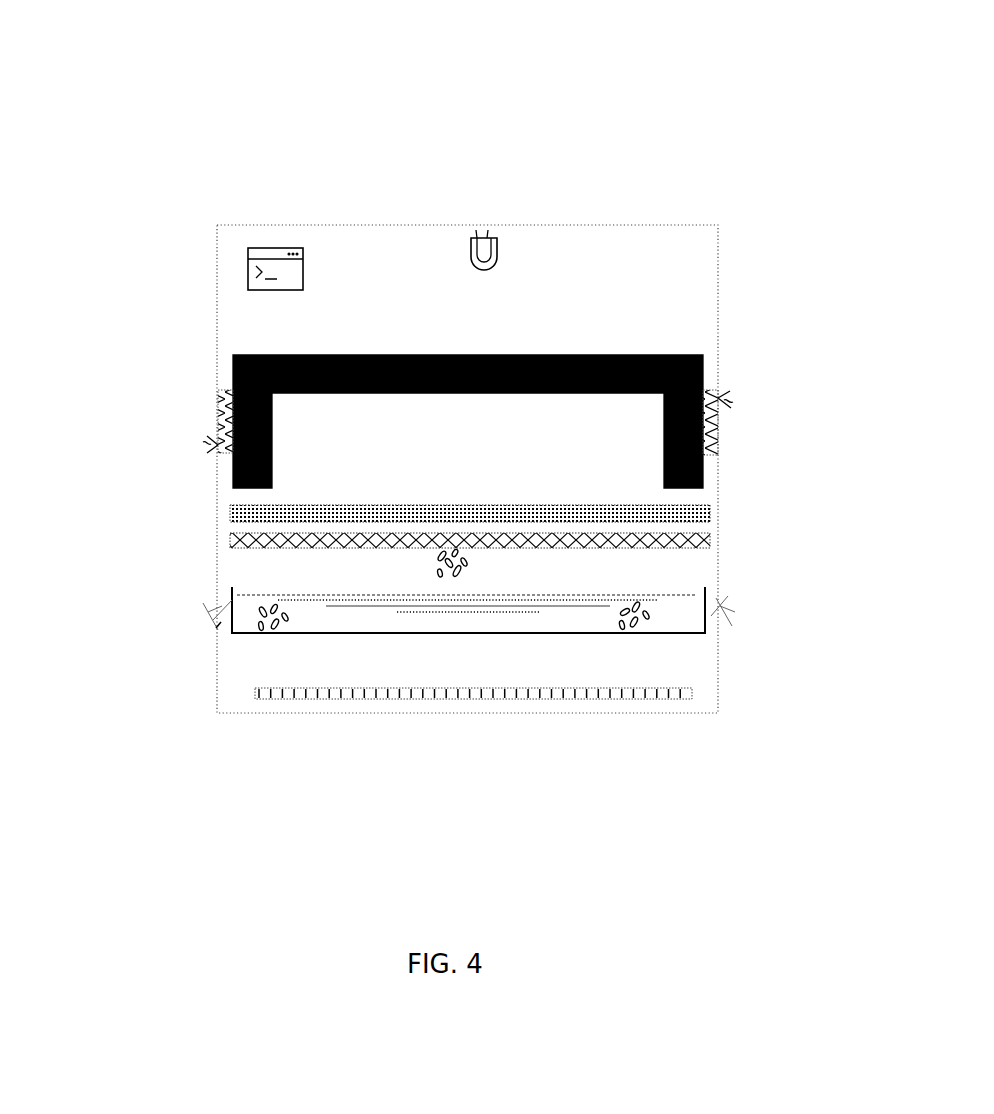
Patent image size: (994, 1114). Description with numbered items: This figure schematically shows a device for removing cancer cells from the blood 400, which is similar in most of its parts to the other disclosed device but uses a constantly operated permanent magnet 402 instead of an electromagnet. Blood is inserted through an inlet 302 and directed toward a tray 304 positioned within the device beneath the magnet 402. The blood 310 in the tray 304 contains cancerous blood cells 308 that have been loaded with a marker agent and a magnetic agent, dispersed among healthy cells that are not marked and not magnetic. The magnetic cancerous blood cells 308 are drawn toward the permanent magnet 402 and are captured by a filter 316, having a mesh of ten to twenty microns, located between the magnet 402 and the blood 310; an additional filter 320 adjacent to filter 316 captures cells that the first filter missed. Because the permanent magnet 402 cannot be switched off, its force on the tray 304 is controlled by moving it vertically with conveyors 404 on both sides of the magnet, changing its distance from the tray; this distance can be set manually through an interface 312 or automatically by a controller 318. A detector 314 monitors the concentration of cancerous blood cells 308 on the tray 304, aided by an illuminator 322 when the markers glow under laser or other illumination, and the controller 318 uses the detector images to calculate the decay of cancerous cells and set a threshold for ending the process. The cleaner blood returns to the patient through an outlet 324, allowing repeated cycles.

The device for removing cancer cells from the blood 400 is at (482, 141).
The inlet 302 is at (722, 600).
The tray 304 is at (233, 633).
The cancerous blood cells 308 is at (640, 604).
The blood 310 is at (588, 631).
The interface 312 is at (248, 250).
The detector 314 is at (516, 699).
The filter 316 is at (314, 548).
The controller 318 is at (293, 272).
The additional filter 320 is at (228, 527).
The illuminator 322 is at (484, 239).
The outlet 324 is at (217, 628).
The permanent magnet 402 is at (233, 382).
The conveyors 404 is at (712, 393).